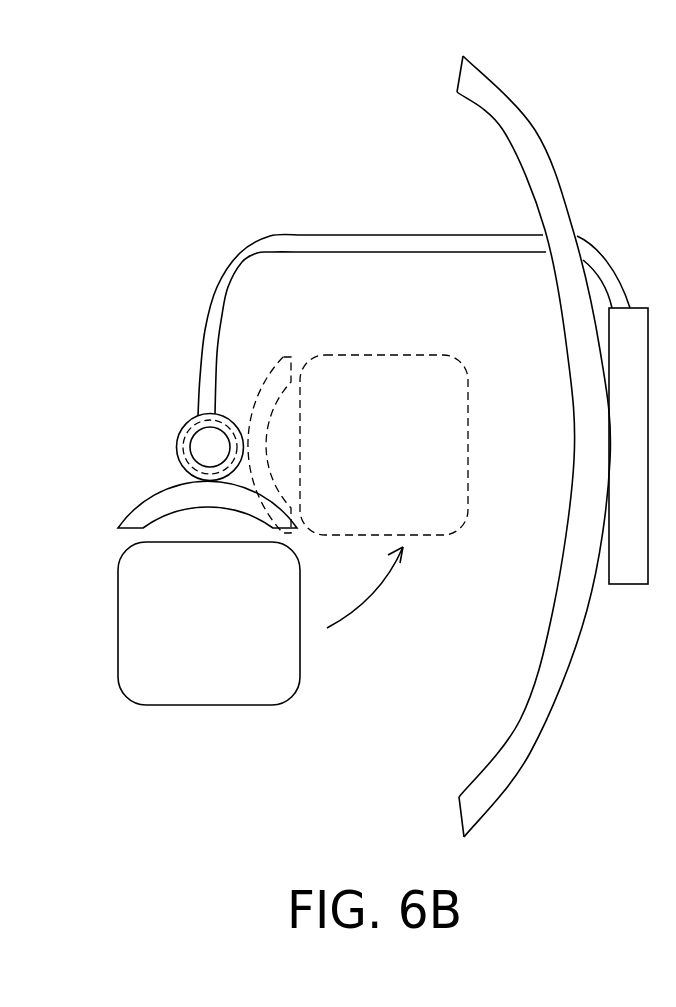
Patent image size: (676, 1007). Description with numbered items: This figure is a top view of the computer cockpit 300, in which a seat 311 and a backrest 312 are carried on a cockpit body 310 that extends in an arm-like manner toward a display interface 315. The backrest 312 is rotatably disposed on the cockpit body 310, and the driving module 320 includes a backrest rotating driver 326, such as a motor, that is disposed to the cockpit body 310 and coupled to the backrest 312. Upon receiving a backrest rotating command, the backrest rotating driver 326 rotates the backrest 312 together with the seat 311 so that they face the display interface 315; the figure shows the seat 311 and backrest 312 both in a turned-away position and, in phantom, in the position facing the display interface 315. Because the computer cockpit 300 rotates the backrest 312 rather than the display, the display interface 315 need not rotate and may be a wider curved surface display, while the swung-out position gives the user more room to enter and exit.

The computer cockpit 300 is at (148, 183).
The cockpit body 310 is at (226, 293).
The seat 311 is at (135, 652).
The backrest 312 is at (143, 503).
The display interface 315 is at (495, 95).
The driving module 320 is at (146, 425).
The backrest rotating driver 326 is at (184, 440).